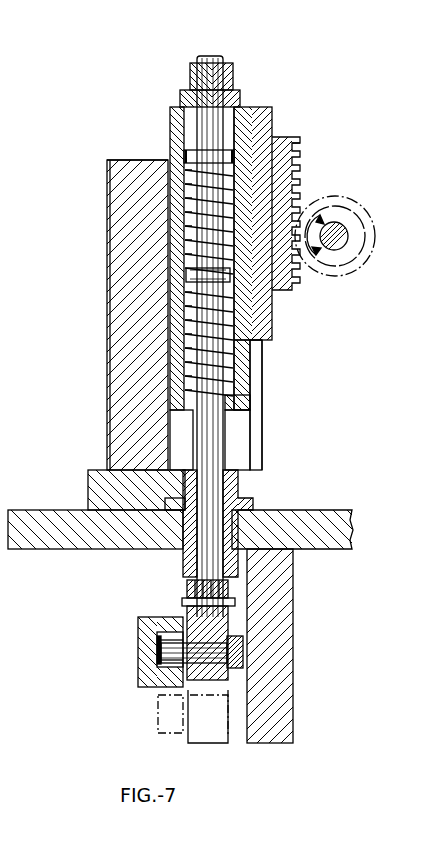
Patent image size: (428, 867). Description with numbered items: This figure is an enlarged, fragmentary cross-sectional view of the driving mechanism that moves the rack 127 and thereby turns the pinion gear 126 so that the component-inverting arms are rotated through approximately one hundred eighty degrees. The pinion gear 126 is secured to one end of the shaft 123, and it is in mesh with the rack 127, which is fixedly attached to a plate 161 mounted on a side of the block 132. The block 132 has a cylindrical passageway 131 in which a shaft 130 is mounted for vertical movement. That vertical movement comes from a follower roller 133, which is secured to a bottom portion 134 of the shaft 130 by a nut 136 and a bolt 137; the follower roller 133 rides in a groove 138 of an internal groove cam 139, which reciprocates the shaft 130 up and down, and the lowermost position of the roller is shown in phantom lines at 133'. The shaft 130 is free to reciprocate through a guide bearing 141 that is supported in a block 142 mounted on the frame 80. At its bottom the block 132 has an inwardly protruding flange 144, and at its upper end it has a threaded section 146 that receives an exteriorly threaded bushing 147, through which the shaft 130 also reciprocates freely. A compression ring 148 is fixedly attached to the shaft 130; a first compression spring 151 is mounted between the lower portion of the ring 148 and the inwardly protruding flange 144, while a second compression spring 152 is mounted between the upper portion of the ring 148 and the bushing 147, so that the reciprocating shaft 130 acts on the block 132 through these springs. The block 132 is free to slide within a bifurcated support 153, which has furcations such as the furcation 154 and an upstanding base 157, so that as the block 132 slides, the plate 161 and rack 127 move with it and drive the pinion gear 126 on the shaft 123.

The frame 80 is at (72, 541).
The shaft 123 is at (344, 242).
The pinion gear 126 is at (338, 216).
The rack 127 is at (300, 146).
The shaft 130 is at (222, 57).
The cylindrical passageway 131 is at (236, 364).
The block 132 is at (246, 397).
The follower roller 133 is at (132, 659).
The lowermost position of follower roller 133' is at (159, 716).
The bottom portion of shaft 134 is at (230, 626).
The nut 136 is at (245, 642).
The bolt 137 is at (245, 653).
The groove 138 is at (158, 642).
The internal groove cam 139 is at (146, 659).
The guide bearing 141 is at (232, 494).
The block 142 is at (110, 482).
The inwardly protruding flange 144 is at (240, 414).
The threaded section 146 is at (183, 112).
The exteriorly threaded bushing 147 is at (234, 75).
The compression ring 148 is at (250, 282).
The first compression spring 151 is at (262, 345).
The second compression spring 152 is at (284, 178).
The bifurcated support 153 is at (118, 152).
The furcation 154 is at (250, 464).
The upstanding base 157 is at (125, 261).
The plate 161 is at (272, 116).